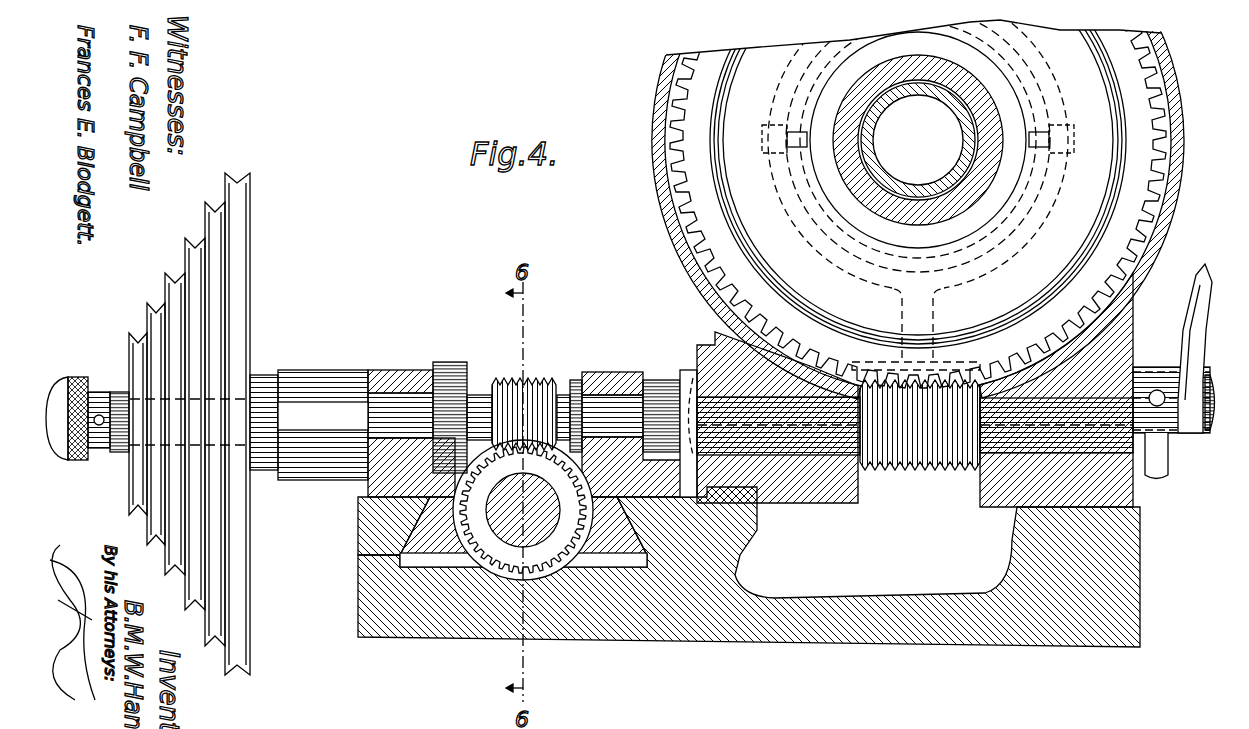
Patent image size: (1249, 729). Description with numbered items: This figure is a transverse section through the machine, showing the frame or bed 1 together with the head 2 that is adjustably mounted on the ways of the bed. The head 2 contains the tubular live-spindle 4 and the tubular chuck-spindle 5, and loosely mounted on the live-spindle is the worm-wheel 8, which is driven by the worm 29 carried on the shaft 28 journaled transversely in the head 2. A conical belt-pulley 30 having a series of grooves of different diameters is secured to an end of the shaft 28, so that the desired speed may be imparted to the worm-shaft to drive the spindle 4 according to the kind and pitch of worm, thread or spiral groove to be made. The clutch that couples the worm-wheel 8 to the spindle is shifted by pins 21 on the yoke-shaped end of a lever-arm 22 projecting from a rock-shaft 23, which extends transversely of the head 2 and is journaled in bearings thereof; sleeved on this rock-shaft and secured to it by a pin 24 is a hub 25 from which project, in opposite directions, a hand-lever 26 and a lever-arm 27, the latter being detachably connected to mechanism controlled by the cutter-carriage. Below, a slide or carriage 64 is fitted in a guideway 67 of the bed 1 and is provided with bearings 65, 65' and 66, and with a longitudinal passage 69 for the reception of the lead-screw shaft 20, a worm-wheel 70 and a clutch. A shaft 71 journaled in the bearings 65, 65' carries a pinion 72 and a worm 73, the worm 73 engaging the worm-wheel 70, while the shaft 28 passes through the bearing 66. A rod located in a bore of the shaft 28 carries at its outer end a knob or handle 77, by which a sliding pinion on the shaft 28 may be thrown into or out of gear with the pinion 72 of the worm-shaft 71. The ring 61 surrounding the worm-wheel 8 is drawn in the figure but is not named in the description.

The frame or bed 1 is at (1140, 575).
The head 2 is at (1127, 335).
The tubular live-spindle 4 is at (966, 118).
The tubular chuck-spindle 5 is at (958, 132).
The worm-wheel 8 is at (918, 194).
The lead-screw shaft 20 is at (534, 490).
The pins 21 is at (800, 130).
The lever-arm 22 is at (935, 303).
The rock-shaft 23 is at (1214, 402).
The pin 24 is at (1157, 390).
The hub 25 is at (1182, 432).
The hand-lever 26 is at (1200, 333).
The lever-arm 27 is at (1168, 462).
The shaft 28 is at (795, 427).
The worm 29 is at (925, 472).
The conical belt-pulley 30 is at (242, 292).
The ring 61 is at (660, 195).
The slide or carriage 64 is at (410, 528).
The bearing 65 is at (411, 415).
The bearing 65' is at (636, 417).
The bearing 66 is at (306, 372).
The guideway 67 is at (425, 555).
The longitudinal passage 69 is at (390, 512).
The worm-wheel 70 is at (523, 540).
The shaft 71 is at (358, 417).
The pinion 72 is at (455, 364).
The worm 73 is at (540, 380).
The knob or handle 77 is at (87, 390).